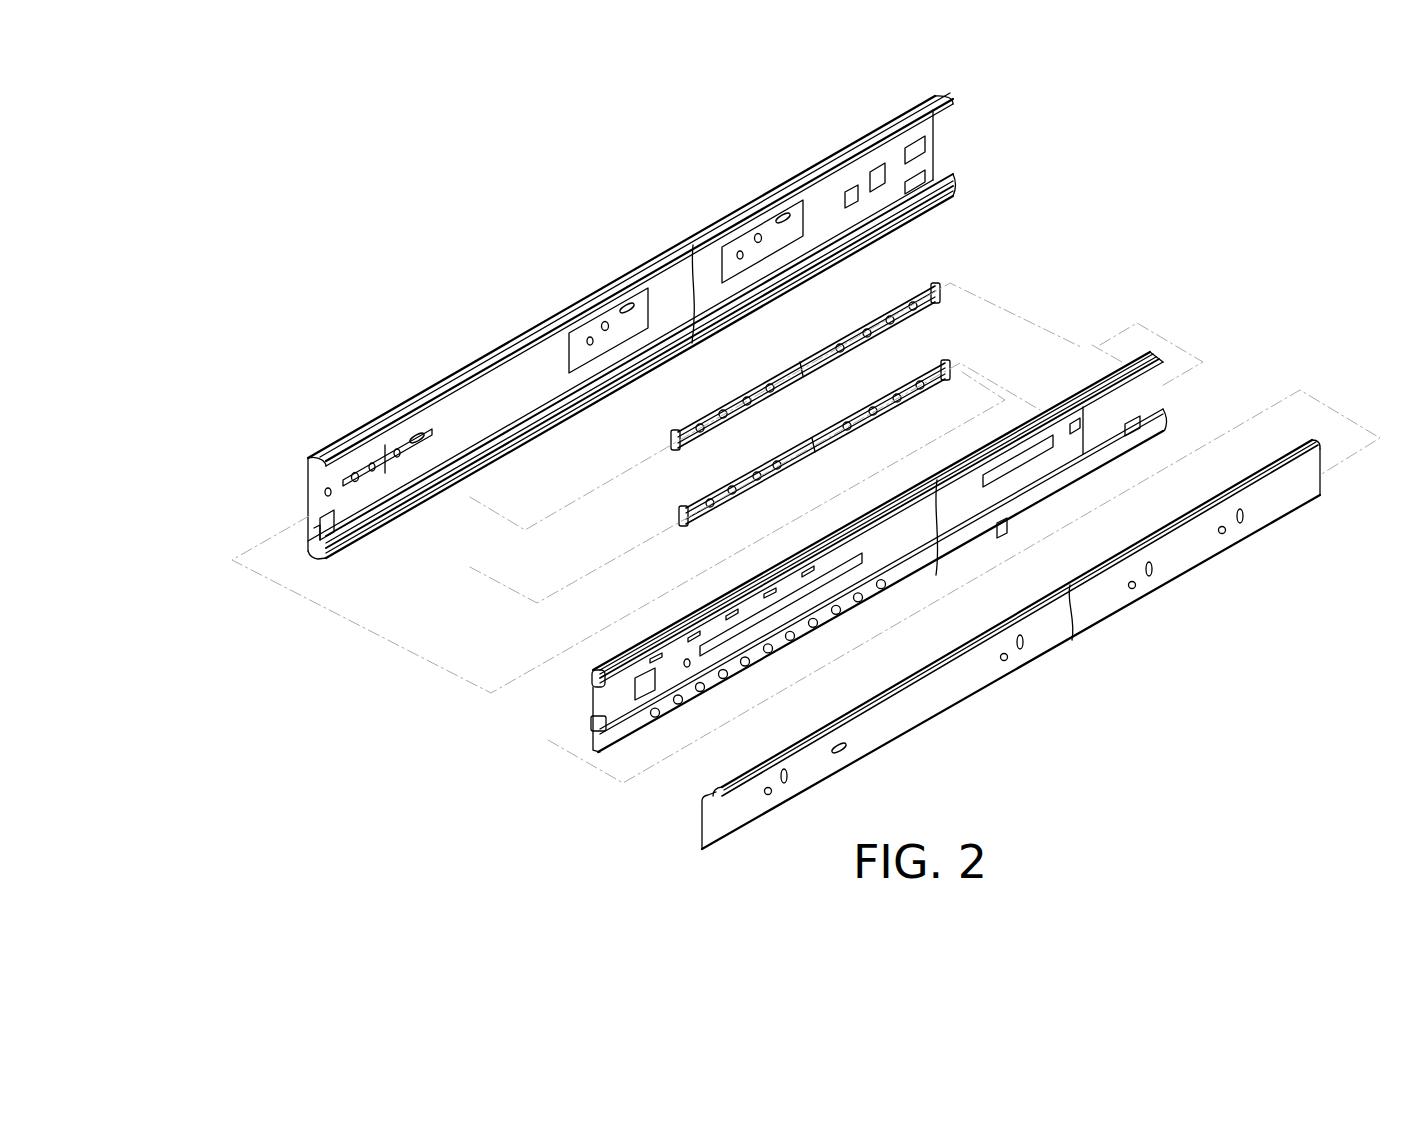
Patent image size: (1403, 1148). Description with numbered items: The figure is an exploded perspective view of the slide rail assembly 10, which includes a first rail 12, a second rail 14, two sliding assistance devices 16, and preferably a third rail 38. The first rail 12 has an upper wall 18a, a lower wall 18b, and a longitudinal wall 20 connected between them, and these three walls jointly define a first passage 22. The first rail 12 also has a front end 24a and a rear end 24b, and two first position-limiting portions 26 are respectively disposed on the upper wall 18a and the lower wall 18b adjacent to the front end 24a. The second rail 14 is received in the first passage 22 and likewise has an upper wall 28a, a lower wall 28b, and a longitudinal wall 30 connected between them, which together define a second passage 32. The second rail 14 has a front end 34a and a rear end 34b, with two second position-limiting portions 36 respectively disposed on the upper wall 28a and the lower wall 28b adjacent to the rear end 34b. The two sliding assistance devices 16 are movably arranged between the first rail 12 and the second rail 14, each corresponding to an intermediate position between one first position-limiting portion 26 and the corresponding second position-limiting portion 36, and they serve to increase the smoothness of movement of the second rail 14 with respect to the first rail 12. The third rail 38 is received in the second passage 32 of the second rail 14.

The slide rail assembly 10 is at (494, 202).
The first rail 12 is at (457, 364).
The second rail 14 is at (553, 732).
The sliding assistance devices 16 is at (823, 430).
The upper wall 18a is at (628, 283).
The lower wall 18b is at (615, 395).
The longitudinal wall 20 is at (820, 218).
The first passage 22 is at (233, 562).
The front end 24a is at (309, 488).
The rear end 24b is at (940, 150).
The first position-limiting portions 26 is at (338, 543).
The upper wall 28a is at (933, 503).
The lower wall 28b is at (1015, 505).
The longitudinal wall 30 is at (964, 500).
The second passage 32 is at (598, 722).
The front end 34a is at (595, 680).
The rear end 34b is at (1164, 357).
The second position-limiting portions 36 is at (1130, 430).
The third rail 38 is at (931, 725).